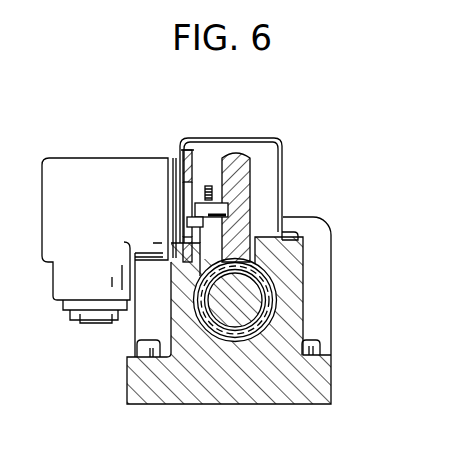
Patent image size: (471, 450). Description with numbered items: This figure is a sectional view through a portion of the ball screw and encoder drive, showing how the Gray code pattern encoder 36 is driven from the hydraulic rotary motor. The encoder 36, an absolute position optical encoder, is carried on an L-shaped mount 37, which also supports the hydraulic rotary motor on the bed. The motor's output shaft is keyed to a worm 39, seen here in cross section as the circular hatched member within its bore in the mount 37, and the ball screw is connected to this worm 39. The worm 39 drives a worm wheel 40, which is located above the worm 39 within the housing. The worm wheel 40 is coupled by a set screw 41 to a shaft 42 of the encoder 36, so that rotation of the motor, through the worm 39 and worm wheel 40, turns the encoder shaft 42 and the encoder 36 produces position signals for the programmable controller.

The Gray code pattern encoder 36 is at (141, 158).
The L-shaped mount 37 is at (333, 384).
The worm 39 is at (272, 290).
The worm wheel 40 is at (234, 152).
The set screw 41 is at (209, 186).
The shaft 42 is at (208, 228).